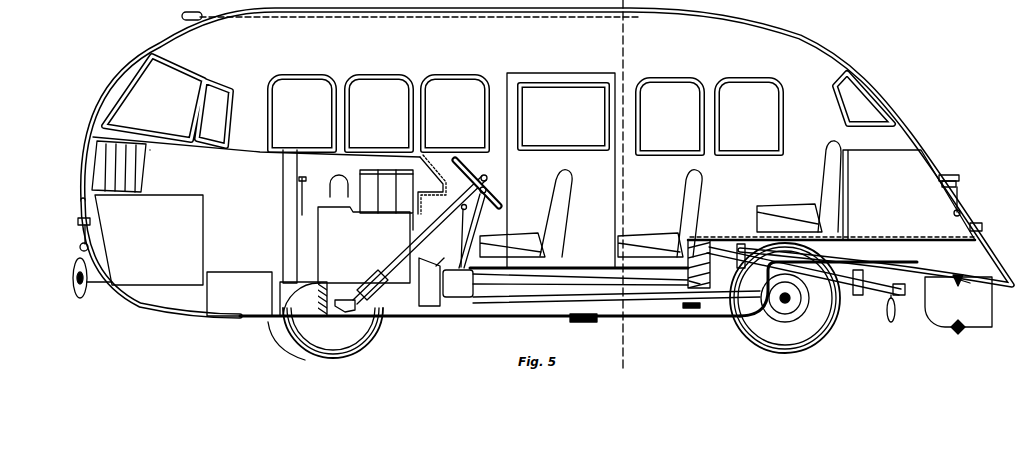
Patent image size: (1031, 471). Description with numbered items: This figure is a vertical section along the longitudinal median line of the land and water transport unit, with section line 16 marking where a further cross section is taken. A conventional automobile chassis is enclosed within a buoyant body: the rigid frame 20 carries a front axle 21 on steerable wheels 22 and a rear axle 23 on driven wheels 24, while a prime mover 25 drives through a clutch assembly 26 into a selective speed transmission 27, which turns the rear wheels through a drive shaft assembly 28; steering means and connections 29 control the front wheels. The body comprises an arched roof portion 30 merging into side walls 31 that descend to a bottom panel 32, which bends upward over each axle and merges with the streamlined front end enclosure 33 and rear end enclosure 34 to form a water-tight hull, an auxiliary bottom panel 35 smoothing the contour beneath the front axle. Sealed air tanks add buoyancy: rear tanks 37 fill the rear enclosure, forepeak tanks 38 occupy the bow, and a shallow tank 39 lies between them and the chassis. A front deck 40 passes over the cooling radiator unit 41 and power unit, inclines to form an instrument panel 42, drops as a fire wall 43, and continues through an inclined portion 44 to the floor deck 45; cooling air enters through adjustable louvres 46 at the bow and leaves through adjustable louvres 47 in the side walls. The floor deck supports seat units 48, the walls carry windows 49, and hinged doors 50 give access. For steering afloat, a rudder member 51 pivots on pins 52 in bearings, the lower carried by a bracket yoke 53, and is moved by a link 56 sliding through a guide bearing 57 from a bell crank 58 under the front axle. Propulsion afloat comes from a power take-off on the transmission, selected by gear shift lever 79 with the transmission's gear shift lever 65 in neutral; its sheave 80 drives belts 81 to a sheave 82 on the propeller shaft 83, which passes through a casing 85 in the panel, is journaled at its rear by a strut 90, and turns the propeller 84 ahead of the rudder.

The section line 16— 16 is at (638, 184).
The rigid frame 20 is at (622, 281).
The front axle 21 is at (320, 306).
The steerable wheels 22 is at (333, 333).
The rear axle 23 is at (785, 298).
The driven wheels 24 is at (785, 299).
The prime mover 25 is at (364, 245).
The clutch assembly 26 is at (432, 283).
The selective speed transmission 27 is at (458, 283).
The drive shaft assembly 28 is at (616, 294).
The steering means and connections 29 is at (368, 290).
The roof portion 30 is at (497, 13).
The side walls 31 is at (547, 163).
The bottom panel 32 is at (502, 315).
The front end enclosure 33 is at (168, 160).
The rear end enclosure 34 is at (927, 180).
The auxiliary bottom panel 35 is at (286, 331).
The rear tanks 37 is at (909, 195).
The forepeak tanks 38 is at (149, 240).
The shallow tank 39 is at (239, 294).
The front deck 40 is at (250, 152).
The cooling radiator unit 41 is at (290, 217).
The instrument panel 42 is at (441, 181).
The fire wall 43 is at (419, 218).
The inclined portion 44 is at (436, 266).
The floor deck 45 is at (570, 267).
The adjustable louvres 46 is at (108, 171).
The adjustable louvres 47 is at (380, 183).
The seat units 48 is at (552, 230).
The windows 49 is at (498, 104).
The hinged doors 50 is at (690, 199).
The rudder member 51 is at (958, 302).
The pins 52 is at (960, 276).
The bracket yoke 53 is at (907, 291).
The link 56 is at (700, 315).
The guide bearing 57 is at (582, 318).
The bell crank 58 is at (964, 283).
The gear shift lever 65 is at (478, 212).
The gear shift lever 79 is at (463, 222).
The sheave 80 is at (689, 281).
The belts 81 is at (704, 277).
The sheave 82 is at (741, 251).
The propeller shaft 83 is at (804, 271).
The propeller 84 is at (893, 311).
The casing 85 is at (752, 243).
The strut 90 is at (865, 279).